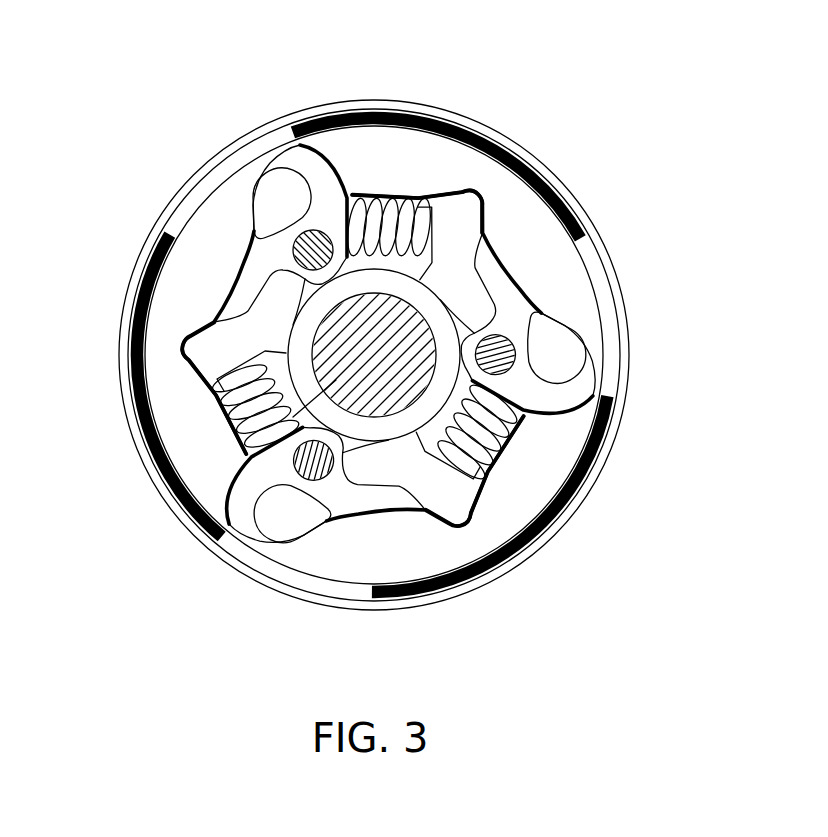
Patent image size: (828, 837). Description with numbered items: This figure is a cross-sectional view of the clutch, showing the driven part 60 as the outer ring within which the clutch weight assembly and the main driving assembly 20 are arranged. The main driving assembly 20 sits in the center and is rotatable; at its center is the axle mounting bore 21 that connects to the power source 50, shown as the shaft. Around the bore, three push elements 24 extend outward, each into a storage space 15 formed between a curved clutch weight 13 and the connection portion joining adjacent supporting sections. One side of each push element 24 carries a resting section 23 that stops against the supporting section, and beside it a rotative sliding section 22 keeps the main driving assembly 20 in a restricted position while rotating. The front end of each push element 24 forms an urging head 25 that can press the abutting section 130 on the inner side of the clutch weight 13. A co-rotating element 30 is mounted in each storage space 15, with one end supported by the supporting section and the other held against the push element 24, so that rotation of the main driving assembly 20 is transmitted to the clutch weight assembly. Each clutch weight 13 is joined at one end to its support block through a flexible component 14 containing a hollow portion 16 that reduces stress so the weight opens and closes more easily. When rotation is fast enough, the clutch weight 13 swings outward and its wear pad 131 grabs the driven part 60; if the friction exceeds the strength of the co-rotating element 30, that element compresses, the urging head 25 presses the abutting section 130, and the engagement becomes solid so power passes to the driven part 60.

The clutch weight 13 is at (434, 161).
The abutting section 130 is at (466, 196).
The wear pad 131 is at (356, 194).
The flexible component 14 is at (570, 393).
The storage space 15 is at (393, 195).
The hollow portion 16 is at (568, 358).
The main driving assembly 20 is at (507, 447).
The axle mounting bore 21 is at (380, 420).
The rotative sliding section 22 is at (407, 373).
The resting section 23 is at (400, 335).
The push element 24 is at (463, 243).
The urging head 25 is at (478, 204).
The co-rotating element 30 is at (352, 112).
The power source 50 is at (230, 482).
The driven part 60 is at (128, 297).